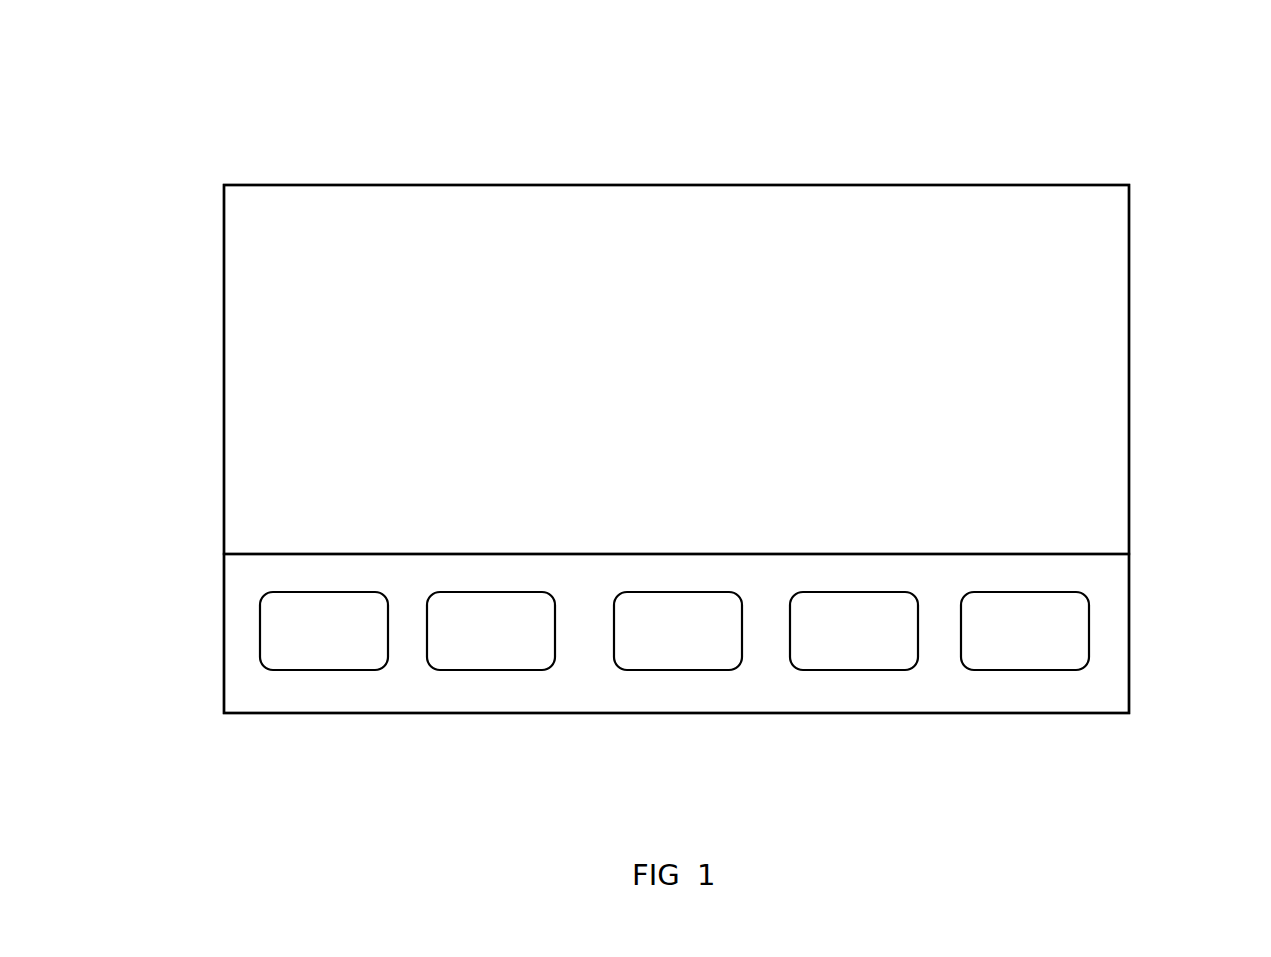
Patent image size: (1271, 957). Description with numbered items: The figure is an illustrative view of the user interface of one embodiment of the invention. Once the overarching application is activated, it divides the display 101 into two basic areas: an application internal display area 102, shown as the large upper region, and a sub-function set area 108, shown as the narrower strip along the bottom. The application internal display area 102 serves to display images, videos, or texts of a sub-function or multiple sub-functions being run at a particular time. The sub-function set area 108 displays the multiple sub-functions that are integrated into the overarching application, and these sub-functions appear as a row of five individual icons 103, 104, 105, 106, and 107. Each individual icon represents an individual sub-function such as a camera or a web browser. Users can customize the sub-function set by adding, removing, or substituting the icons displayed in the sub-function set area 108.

The display 101 is at (232, 155).
The application internal display area 102 is at (945, 255).
The icon 103 is at (286, 646).
The icon 104 is at (468, 658).
The icon 105 is at (718, 657).
The icon 106 is at (894, 660).
The icon 107 is at (1073, 641).
The sub-function set area 108 is at (958, 570).